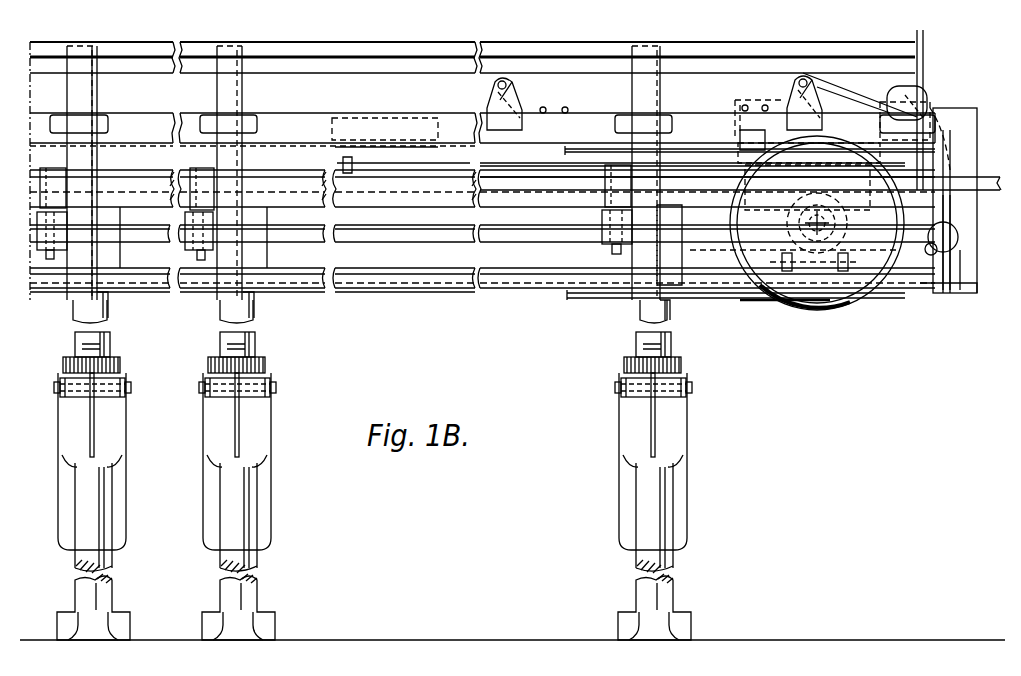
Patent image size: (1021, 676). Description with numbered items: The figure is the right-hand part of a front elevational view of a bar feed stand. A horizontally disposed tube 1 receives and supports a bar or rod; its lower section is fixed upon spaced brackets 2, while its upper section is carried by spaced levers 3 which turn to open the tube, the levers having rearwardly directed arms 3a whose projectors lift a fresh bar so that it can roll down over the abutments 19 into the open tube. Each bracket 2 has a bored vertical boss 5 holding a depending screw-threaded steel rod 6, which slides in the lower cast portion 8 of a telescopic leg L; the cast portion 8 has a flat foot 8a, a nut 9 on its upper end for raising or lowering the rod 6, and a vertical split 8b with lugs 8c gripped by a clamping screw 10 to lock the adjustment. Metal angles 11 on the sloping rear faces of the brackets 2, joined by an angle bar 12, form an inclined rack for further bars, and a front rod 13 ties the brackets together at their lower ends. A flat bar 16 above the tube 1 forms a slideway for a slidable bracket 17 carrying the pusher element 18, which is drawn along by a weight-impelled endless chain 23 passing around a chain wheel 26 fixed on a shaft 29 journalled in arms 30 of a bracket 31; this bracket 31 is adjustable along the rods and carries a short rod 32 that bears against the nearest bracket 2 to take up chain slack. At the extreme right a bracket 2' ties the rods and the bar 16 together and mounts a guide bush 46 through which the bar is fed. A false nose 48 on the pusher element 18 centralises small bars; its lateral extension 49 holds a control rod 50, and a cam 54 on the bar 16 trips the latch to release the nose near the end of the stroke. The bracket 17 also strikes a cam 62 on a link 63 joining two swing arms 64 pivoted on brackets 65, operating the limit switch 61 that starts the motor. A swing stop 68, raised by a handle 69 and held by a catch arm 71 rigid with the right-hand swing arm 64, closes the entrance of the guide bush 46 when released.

The tube 1 is at (395, 194).
The brackets 2 is at (359, 310).
The bracket 2' is at (969, 242).
The levers 3 is at (50, 176).
The rearwardly directed arms 3a is at (50, 258).
The vertical boss 5 is at (112, 253).
The depending steel rod 6 is at (108, 309).
The lower cast portion 8 is at (108, 505).
The flat feet 8a is at (128, 620).
The vertical split 8b is at (95, 437).
The lugs 8c is at (100, 400).
The nut 9 is at (121, 366).
The clamping screw 10 is at (58, 384).
The metal angles 11 is at (220, 92).
The angle bar 12 is at (297, 50).
The front rod 13 is at (425, 278).
The bar 16 is at (438, 118).
The slidable bracket 17 is at (738, 184).
The pusher element 18 is at (780, 205).
The abutments 19 is at (122, 176).
The endless chain 23 is at (732, 305).
The chain wheel 26 is at (775, 305).
The shaft 29 is at (840, 226).
The arms 30 is at (790, 245).
The bracket 31 is at (838, 305).
The short rod 32 is at (688, 265).
The guide bush 46 is at (955, 175).
The false nose 48 is at (922, 106).
The lateral extension 49 is at (868, 133).
The control rod 50 is at (545, 158).
The cam 54 is at (375, 125).
The limit switch 61 is at (905, 100).
The cam 62 is at (738, 128).
The link 63 is at (713, 98).
The swing arms 64 is at (522, 108).
The brackets 65 is at (530, 100).
The swing stop 68 is at (950, 125).
The handle 69 is at (958, 236).
The catch arm 71 is at (850, 95).
The telescopic leg L is at (112, 343).